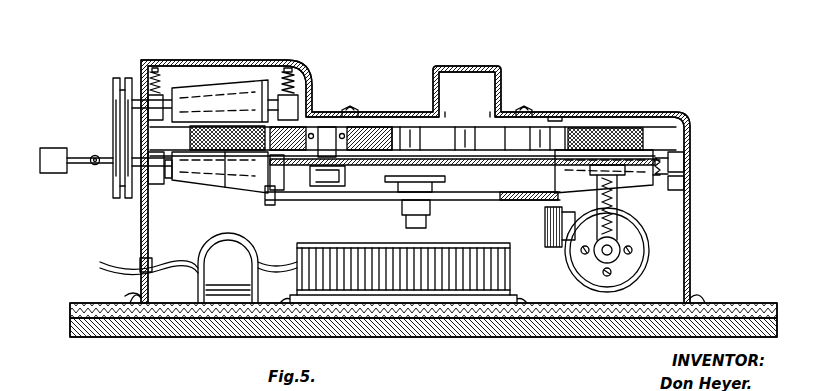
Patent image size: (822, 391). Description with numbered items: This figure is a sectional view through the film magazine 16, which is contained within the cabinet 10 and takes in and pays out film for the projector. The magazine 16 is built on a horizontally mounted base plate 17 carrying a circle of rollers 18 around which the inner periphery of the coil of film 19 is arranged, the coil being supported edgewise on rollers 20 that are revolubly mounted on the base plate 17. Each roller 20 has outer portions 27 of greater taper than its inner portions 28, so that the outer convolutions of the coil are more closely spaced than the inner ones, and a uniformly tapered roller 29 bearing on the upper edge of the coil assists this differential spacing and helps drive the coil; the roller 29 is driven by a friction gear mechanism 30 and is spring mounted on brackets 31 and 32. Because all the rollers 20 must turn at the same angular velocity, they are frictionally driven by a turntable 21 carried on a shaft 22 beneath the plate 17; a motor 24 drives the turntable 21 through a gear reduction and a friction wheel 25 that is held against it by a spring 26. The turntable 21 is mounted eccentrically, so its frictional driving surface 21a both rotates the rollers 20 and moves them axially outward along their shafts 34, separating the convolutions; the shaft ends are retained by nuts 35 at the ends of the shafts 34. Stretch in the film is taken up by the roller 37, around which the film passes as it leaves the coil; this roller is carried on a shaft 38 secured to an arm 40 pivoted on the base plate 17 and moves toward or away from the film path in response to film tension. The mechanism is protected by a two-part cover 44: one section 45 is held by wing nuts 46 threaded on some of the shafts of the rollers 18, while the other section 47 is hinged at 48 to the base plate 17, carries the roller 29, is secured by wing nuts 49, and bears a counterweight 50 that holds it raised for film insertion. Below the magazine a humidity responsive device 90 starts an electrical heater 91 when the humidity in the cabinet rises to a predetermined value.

The cabinet 10 is at (127, 337).
The magazine 16 is at (692, 136).
The base plate 17 is at (499, 190).
The rollers 18 is at (455, 128).
The coil of film 19 is at (608, 130).
The rollers 20 is at (208, 192).
The turntable 21 is at (336, 200).
The frictional driving surface 21a is at (527, 186).
The shaft 22 is at (412, 172).
The motor 24 is at (652, 246).
The friction wheel 25 is at (545, 236).
The spring 26 is at (613, 215).
The outer portions 27 is at (182, 183).
The inner portions 28 is at (250, 192).
The tapered roller 29 is at (230, 88).
The friction gear mechanism 30 is at (112, 141).
The bracket 31 is at (297, 95).
The bracket 32 is at (162, 94).
The shafts 34 is at (280, 195).
The nut 35 is at (148, 182).
The roller 37 is at (386, 128).
The shaft 38 is at (328, 127).
The arm 40 is at (346, 172).
The cover 44 is at (489, 70).
The cover section 45 is at (558, 119).
The wing nuts 46 is at (527, 106).
The cover section 47 is at (374, 117).
The hinge 48 is at (93, 166).
The wing nuts 49 is at (352, 106).
The counterweight 50 is at (56, 148).
The humidity responsive device 90 is at (198, 268).
The electrical heater 91 is at (490, 273).